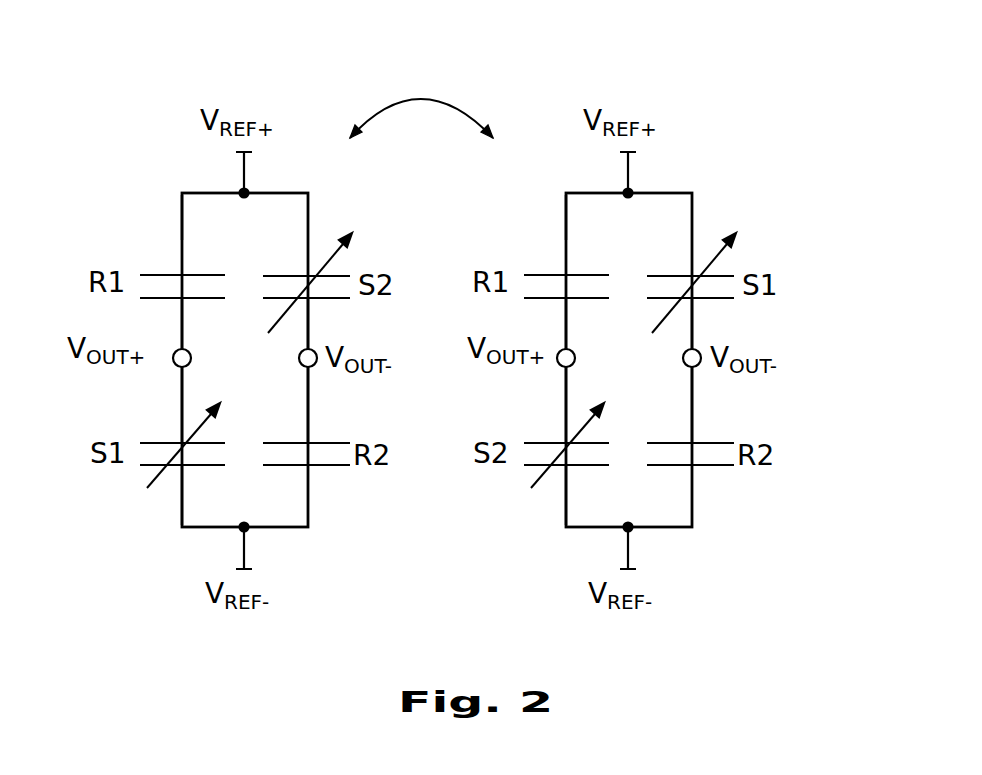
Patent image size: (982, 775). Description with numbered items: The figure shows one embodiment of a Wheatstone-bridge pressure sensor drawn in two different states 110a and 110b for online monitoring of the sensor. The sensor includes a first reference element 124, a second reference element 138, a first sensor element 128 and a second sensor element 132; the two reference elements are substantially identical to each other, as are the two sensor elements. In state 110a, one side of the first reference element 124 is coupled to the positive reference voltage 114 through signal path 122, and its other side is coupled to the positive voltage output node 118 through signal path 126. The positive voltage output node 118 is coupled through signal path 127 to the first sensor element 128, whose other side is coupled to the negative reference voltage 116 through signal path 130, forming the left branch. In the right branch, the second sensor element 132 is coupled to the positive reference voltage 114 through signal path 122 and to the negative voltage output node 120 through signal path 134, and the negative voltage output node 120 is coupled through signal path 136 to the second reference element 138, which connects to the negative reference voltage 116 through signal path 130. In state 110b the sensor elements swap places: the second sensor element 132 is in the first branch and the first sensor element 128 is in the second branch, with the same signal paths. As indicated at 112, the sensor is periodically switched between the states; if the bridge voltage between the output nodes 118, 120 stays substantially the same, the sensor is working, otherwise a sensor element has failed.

The first state 110a is at (168, 125).
The second state 110b is at (718, 118).
The switching between states 112 is at (422, 100).
The positive reference voltage 114 is at (242, 152).
The negative reference voltage 116 is at (250, 570).
The positive voltage output node 118 is at (175, 364).
The negative voltage output node 120 is at (312, 367).
The signal path 122 is at (182, 220).
The first reference element 124 is at (162, 276).
The signal path 126 is at (177, 328).
The signal path 127 is at (180, 413).
The first sensor element 128 is at (150, 467).
The signal path 130 is at (203, 530).
The second sensor element 132 is at (292, 275).
The signal path 134 is at (310, 326).
The signal path 136 is at (310, 433).
The second reference element 138 is at (325, 468).